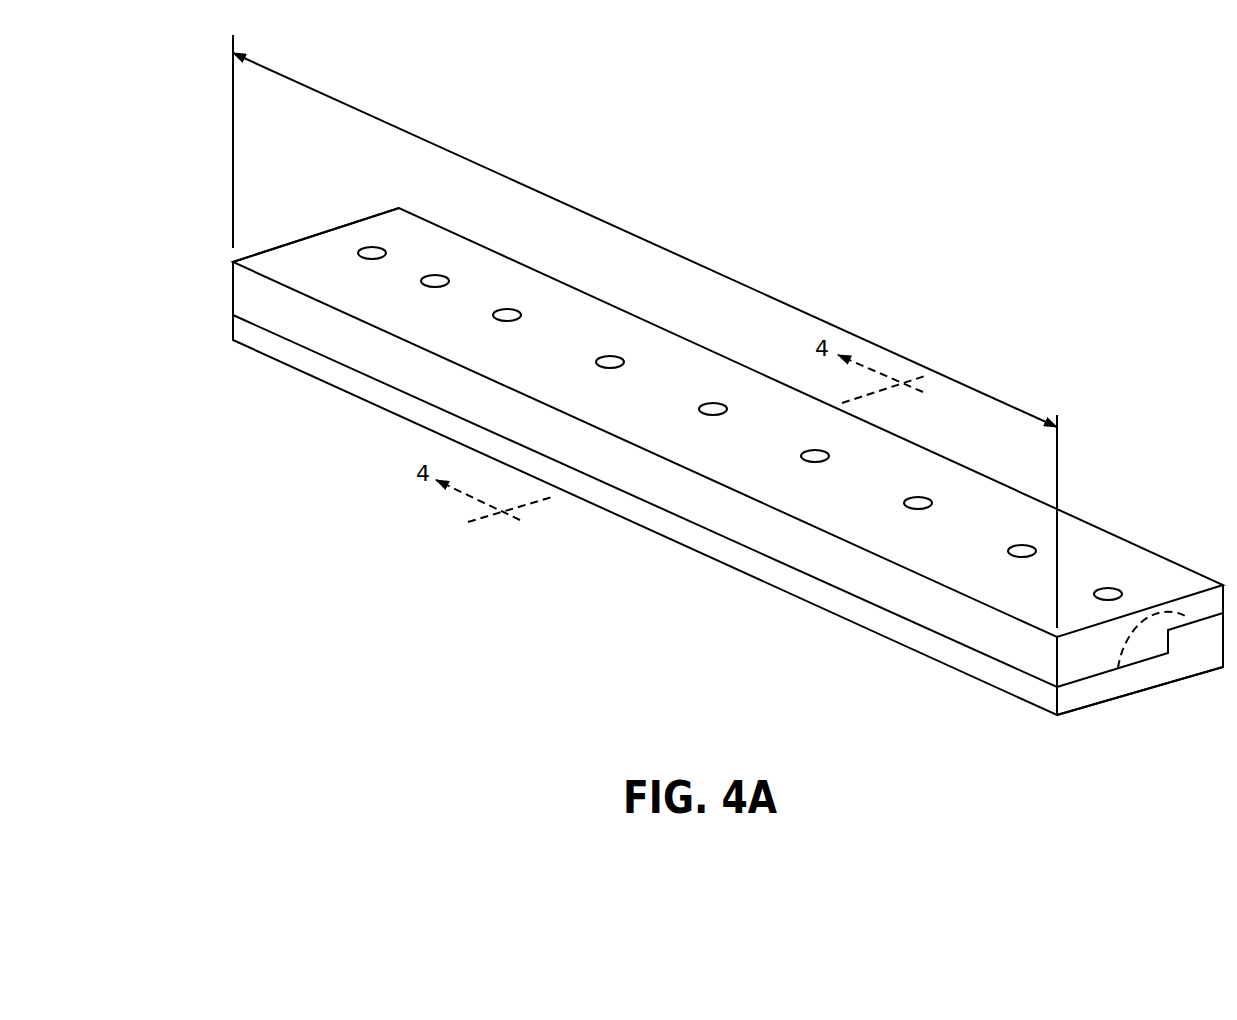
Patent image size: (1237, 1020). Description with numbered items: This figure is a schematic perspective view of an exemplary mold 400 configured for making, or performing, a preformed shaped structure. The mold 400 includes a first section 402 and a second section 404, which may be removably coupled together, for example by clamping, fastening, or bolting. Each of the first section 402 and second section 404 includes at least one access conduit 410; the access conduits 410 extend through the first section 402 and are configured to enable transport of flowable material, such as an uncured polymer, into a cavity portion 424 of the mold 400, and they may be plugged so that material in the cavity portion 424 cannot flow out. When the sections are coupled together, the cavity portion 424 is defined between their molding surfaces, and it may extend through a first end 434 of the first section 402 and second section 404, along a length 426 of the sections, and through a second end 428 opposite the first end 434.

The mold 400 is at (676, 469).
The first section 402 is at (472, 253).
The second section 404 is at (245, 349).
The access conduits 410 is at (610, 362).
The cavity portion 424 is at (1160, 648).
The length 426 is at (643, 238).
The second end 428 is at (351, 221).
The first end 434 is at (1065, 726).